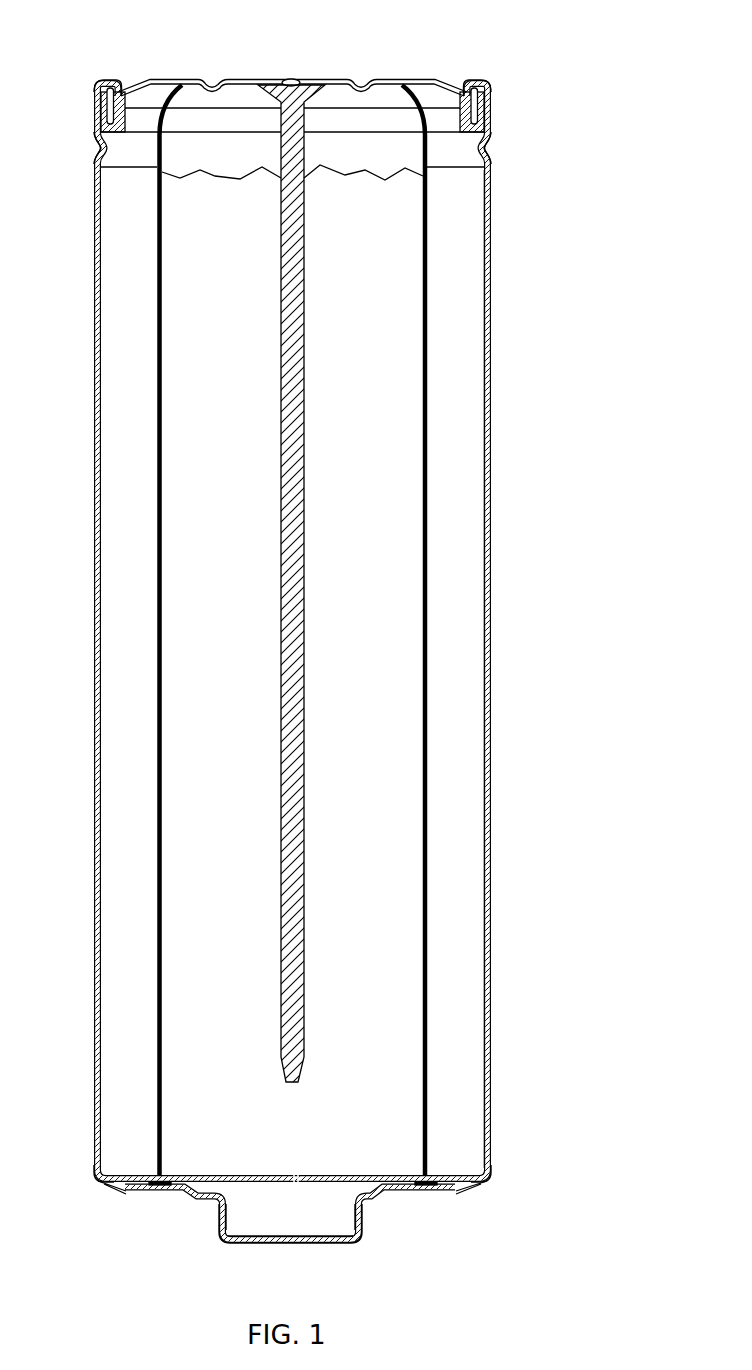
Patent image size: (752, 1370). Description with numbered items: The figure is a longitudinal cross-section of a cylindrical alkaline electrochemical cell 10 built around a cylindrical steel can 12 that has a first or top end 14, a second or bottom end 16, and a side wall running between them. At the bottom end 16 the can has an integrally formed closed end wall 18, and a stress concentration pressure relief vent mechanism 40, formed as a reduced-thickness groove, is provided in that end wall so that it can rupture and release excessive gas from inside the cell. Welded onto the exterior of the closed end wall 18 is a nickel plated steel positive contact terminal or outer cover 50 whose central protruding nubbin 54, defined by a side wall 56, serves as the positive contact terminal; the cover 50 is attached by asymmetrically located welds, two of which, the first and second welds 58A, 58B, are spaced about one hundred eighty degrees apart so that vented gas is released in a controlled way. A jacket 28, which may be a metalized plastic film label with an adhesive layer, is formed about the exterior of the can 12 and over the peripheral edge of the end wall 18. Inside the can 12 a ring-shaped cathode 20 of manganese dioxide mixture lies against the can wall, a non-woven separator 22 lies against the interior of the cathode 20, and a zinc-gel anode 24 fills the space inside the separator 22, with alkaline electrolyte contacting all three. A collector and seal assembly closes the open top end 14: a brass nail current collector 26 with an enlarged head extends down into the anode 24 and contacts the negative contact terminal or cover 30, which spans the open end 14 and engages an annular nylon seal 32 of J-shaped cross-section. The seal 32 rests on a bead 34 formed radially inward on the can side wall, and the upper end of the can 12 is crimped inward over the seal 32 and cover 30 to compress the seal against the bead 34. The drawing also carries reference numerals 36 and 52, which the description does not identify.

The electrochemical cell 10 is at (586, 33).
The steel can 12 is at (492, 272).
The first or top end 14 is at (98, 84).
The second or bottom end 16 is at (95, 1180).
The closed end wall 18 is at (186, 1200).
The cathode 20 is at (466, 306).
The separator 22 is at (426, 363).
The anode 24 is at (386, 462).
The current collector 26 is at (303, 601).
The jacket 28 is at (491, 702).
The negative contact terminal or cover 30 is at (340, 79).
The annular polymeric seal 32 is at (492, 104).
The bead 34 is at (488, 149).
The rivet / contact 36 is at (294, 79).
The pressure relief vent mechanism 40 is at (293, 1198).
The positive contact terminal or outer cover 50 is at (378, 1254).
The insulating ring 52 is at (128, 1195).
The nubbin 54 is at (328, 1244).
The side wall 56 is at (222, 1215).
The first weld 58A is at (160, 1195).
The second weld 58B is at (429, 1195).